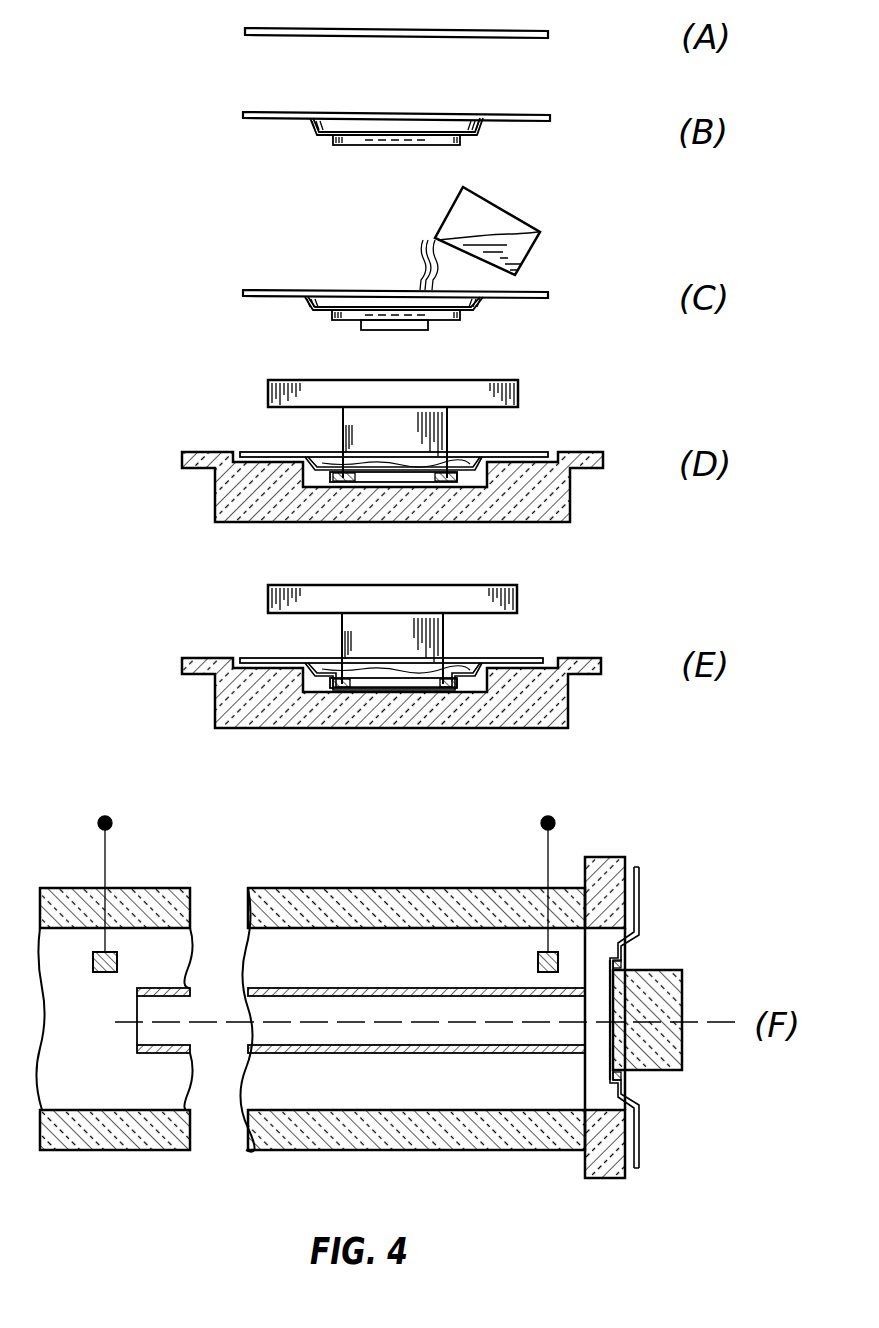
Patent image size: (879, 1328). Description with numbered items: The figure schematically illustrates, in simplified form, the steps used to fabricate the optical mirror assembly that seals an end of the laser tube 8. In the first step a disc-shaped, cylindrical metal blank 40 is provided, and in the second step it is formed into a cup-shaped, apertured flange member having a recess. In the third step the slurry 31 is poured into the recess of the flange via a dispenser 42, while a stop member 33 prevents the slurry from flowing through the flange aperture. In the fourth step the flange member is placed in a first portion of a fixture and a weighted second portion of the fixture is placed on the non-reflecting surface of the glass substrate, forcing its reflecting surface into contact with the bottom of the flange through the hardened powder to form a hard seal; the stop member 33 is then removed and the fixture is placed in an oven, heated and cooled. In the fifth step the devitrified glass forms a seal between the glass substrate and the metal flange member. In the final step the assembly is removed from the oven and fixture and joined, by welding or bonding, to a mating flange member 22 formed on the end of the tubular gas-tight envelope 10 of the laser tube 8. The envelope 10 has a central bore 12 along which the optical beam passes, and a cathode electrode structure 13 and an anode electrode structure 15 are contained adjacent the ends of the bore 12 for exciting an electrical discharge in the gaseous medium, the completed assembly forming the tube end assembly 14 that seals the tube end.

The laser tube 8 is at (354, 886).
The tubular gas-tight envelope 10 is at (318, 1150).
The central bore 12 is at (287, 1053).
The cathode electrode structure 13 is at (112, 952).
The tube end assembly 14 is at (640, 925).
The anode electrode structure 15 is at (529, 950).
The mating flange member 22 is at (586, 1178).
The slurry 31 is at (418, 266).
The stop member 33 is at (428, 330).
The metal blank 40 is at (548, 37).
The dispenser 42 is at (540, 231).